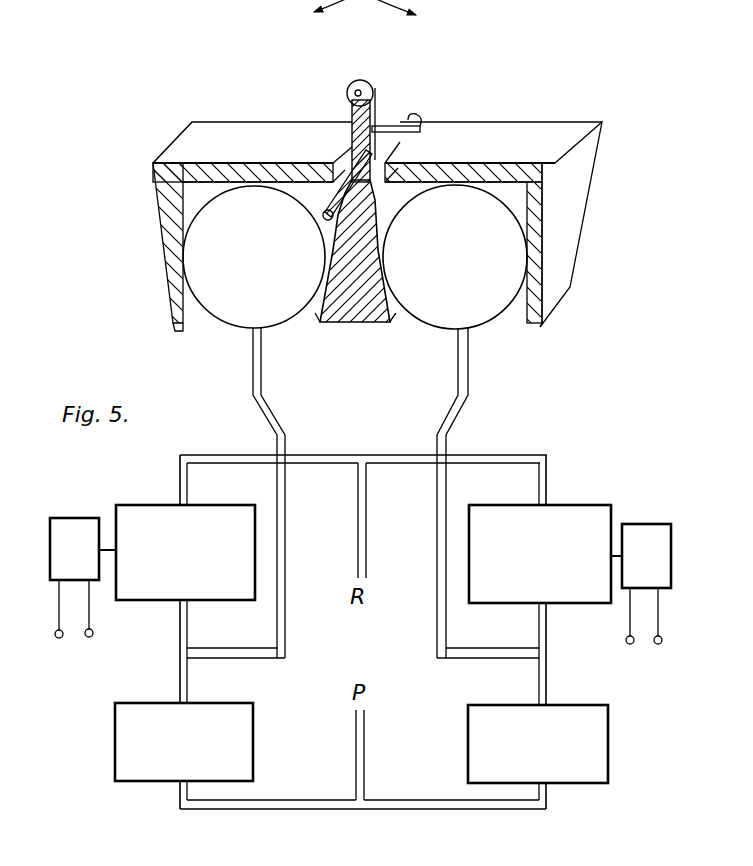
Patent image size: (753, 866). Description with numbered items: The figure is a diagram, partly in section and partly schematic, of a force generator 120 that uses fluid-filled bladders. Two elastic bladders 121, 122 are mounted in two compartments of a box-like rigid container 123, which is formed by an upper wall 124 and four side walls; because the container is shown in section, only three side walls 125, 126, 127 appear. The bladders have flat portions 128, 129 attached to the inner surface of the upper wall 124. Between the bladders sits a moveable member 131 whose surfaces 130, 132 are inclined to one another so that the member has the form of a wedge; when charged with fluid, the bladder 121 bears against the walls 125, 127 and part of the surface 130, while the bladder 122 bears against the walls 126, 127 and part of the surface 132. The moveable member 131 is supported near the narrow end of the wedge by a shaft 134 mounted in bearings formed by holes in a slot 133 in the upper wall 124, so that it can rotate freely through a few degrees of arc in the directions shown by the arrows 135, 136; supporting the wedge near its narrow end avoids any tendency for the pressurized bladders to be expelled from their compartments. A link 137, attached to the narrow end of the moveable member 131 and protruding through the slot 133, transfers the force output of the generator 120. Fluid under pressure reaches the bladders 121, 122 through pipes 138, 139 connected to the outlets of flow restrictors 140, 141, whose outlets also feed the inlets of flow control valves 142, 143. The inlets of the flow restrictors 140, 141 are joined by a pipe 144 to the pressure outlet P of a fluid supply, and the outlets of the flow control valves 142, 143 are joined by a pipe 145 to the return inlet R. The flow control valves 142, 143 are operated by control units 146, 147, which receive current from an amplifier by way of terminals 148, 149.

The force generator 120 is at (390, 219).
The bladder 121 is at (240, 305).
The bladder 122 is at (477, 313).
The rigid container 123 is at (377, 152).
The upper wall 124 is at (188, 162).
The side wall 125 is at (175, 320).
The side wall 126 is at (545, 326).
The side wall 127 is at (537, 123).
The flat portion 128 is at (205, 212).
The flat portion 129 is at (481, 188).
The surface 130 is at (317, 313).
The moveable member 131 is at (367, 313).
The surface 132 is at (395, 313).
The slot 133 is at (385, 133).
The shaft 134 is at (409, 114).
The arrow 135 is at (335, 17).
The arrow 136 is at (387, 17).
The link 137 is at (352, 113).
The pipe 138 is at (285, 541).
The pipe 139 is at (437, 541).
The flow restrictor 140 is at (115, 751).
The flow restrictor 141 is at (608, 753).
The flow control valve 142 is at (157, 492).
The flow control valve 143 is at (580, 503).
The pipe 144 is at (373, 811).
The pipe 145 is at (388, 455).
The control unit 146 is at (75, 528).
The control unit 147 is at (657, 518).
The terminal 148 is at (57, 640).
The terminal 149 is at (92, 637).